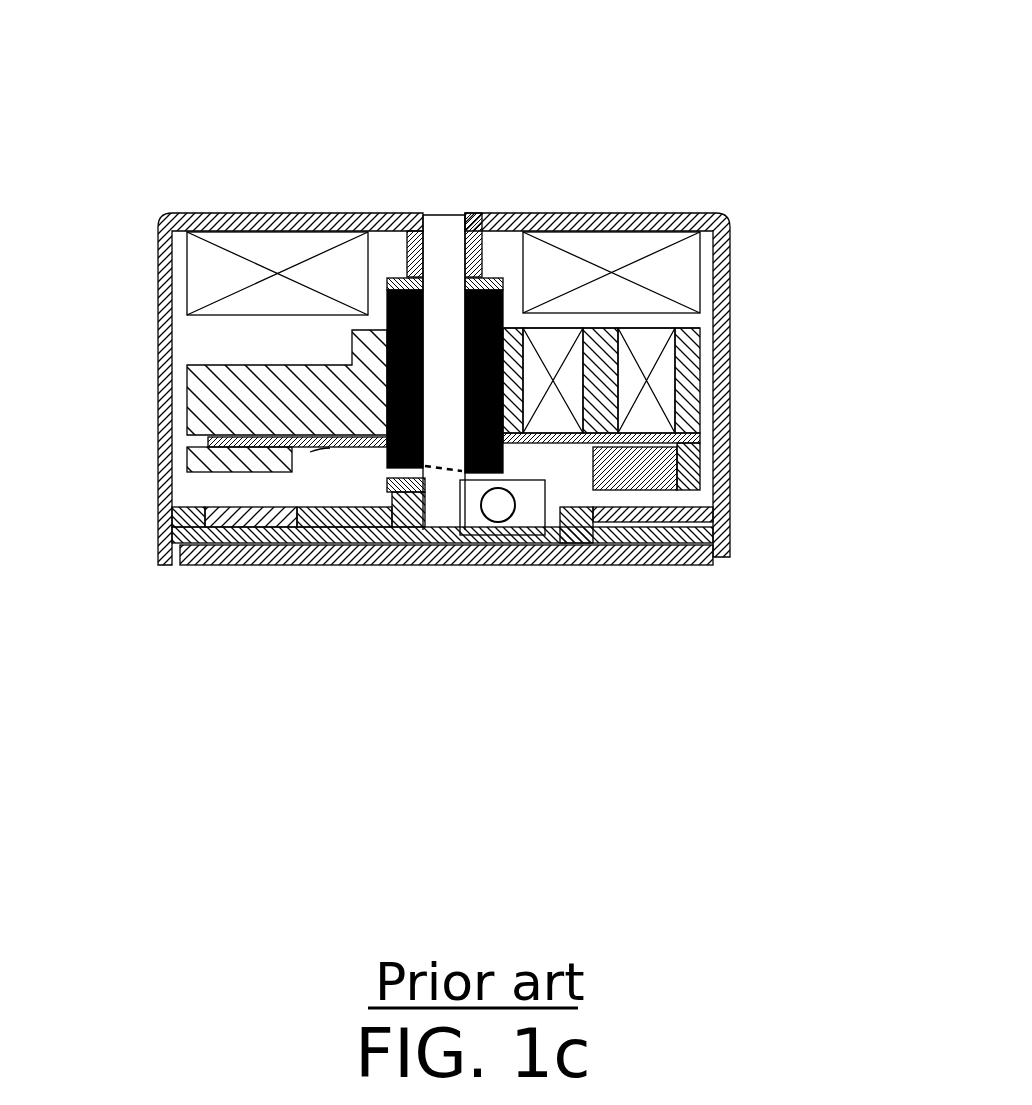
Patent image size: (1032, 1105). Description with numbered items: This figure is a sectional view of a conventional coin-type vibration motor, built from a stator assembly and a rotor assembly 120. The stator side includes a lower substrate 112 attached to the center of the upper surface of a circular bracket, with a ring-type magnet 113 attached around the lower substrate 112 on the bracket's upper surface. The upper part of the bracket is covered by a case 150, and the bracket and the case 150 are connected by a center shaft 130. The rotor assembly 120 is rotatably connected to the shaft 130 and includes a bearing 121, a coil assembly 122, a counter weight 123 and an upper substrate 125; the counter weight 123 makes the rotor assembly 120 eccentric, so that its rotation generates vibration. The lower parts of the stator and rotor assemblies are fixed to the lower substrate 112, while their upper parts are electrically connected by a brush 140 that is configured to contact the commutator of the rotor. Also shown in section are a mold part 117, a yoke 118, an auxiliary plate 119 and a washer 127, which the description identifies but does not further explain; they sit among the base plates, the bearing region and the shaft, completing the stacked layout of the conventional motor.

The lower substrate 112 is at (580, 565).
The ring-type magnet 113 is at (257, 213).
The mold part 117 is at (667, 545).
The yoke 118 is at (727, 517).
The auxiliary plate 119 is at (523, 535).
The rotor assembly 120 is at (197, 373).
The bearing 121 is at (503, 308).
The coil assembly 122 is at (657, 333).
The counter weight 123 is at (662, 492).
The upper substrate 125 is at (660, 440).
The washer 127 is at (503, 305).
The center shaft 130 is at (444, 222).
The brush 140 is at (388, 456).
The case 150 is at (342, 213).